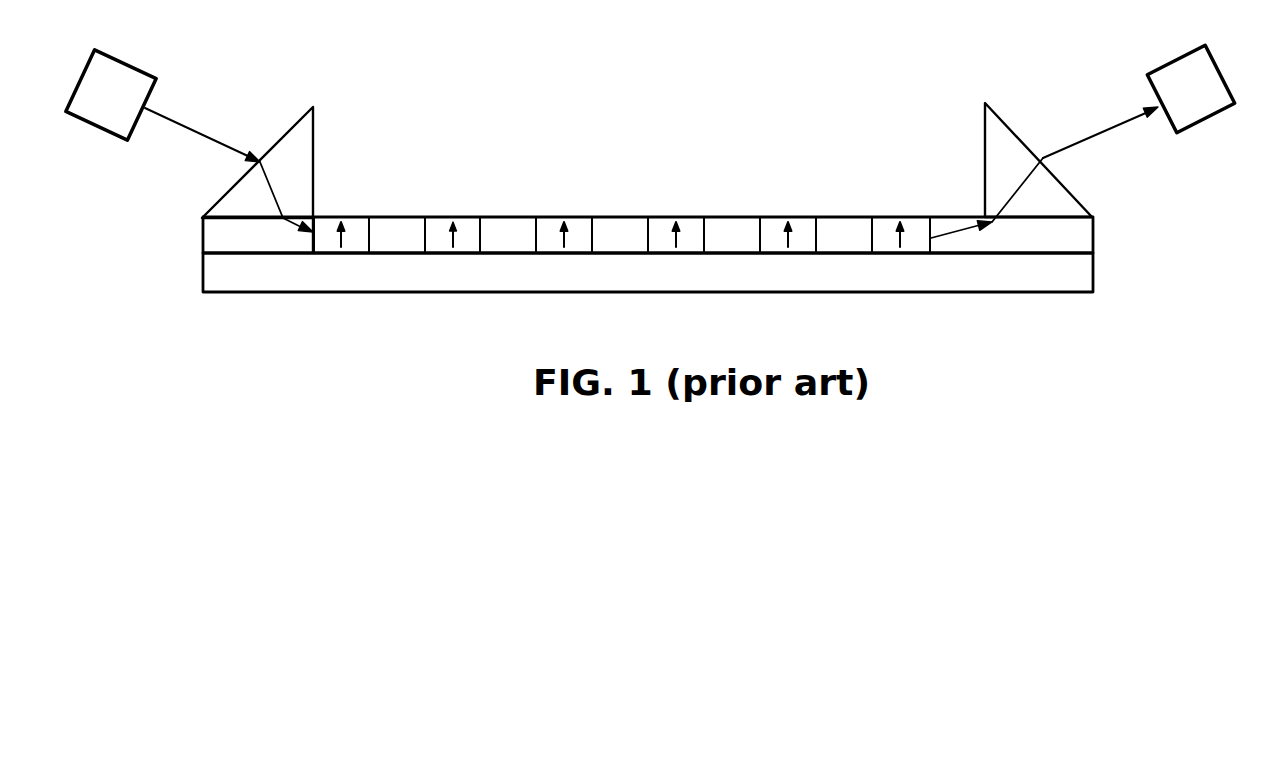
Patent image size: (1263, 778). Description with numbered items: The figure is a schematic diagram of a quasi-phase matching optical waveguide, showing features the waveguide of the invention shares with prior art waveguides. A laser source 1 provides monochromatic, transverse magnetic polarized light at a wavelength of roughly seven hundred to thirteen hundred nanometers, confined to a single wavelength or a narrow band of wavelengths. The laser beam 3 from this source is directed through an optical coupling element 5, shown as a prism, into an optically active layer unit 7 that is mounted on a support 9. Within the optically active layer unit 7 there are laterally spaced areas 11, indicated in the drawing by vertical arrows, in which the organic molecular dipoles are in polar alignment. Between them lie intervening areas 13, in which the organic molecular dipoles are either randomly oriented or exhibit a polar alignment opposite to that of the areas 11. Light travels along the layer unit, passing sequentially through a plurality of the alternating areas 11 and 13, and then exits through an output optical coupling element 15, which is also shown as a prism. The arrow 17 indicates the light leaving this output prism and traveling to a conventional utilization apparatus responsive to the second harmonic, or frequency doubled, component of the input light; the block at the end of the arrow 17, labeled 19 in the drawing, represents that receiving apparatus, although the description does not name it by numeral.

The laser source 1 is at (120, 60).
The laser beam 3 is at (183, 123).
The optical coupling element 5 is at (315, 153).
The optically active layer unit 7 is at (200, 238).
The support 9 is at (280, 293).
The laterally spaced areas 11 is at (458, 222).
The intervening areas 13 is at (517, 223).
The output optical coupling element 15 is at (1023, 138).
The arrow 17 is at (1113, 130).
The detector 19 is at (1208, 122).